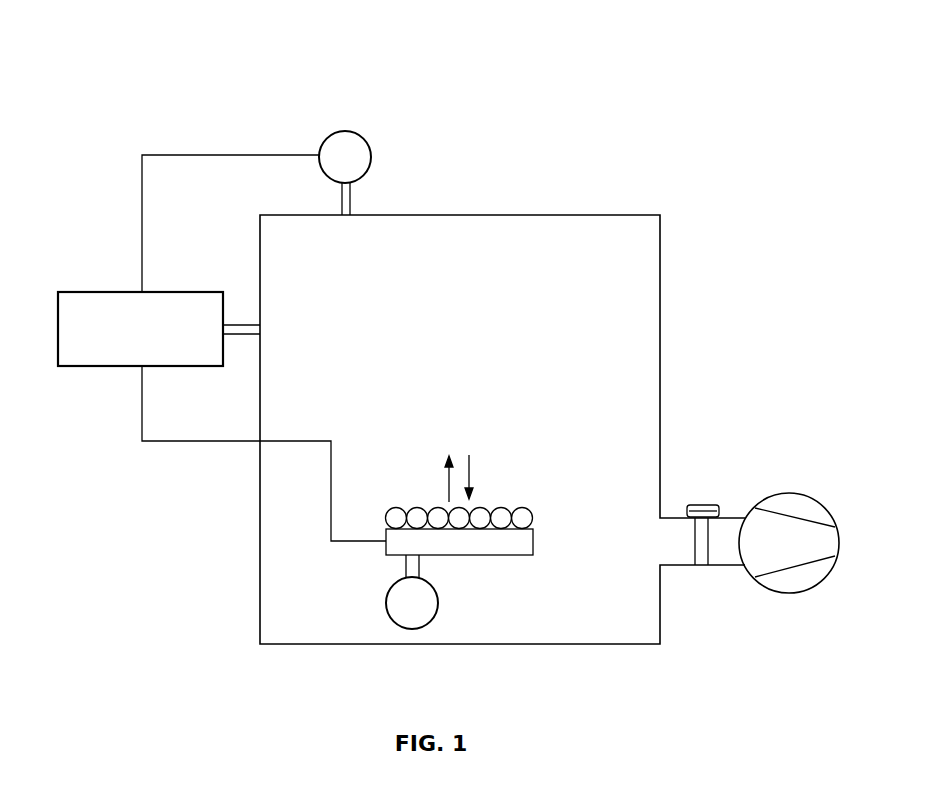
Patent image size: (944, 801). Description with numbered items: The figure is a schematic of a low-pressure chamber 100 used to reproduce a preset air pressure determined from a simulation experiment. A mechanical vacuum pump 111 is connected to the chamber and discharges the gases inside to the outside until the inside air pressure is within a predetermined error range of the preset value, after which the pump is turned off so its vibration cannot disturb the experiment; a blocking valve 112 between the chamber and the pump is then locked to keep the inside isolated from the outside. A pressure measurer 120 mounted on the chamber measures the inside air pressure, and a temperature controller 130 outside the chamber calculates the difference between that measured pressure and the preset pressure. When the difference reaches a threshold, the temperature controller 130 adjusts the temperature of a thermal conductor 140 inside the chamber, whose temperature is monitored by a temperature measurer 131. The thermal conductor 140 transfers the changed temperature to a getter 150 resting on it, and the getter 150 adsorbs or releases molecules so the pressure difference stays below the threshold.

The low-pressure chamber 100 is at (466, 28).
The mechanical vacuum pump 111 is at (787, 493).
The blocking valve 112 is at (701, 505).
The pressure measurer 120 is at (371, 154).
The temperature controller 130 is at (172, 292).
The temperature measurer 131 is at (438, 601).
The thermal conductor 140 is at (533, 543).
The getter 150 is at (524, 507).